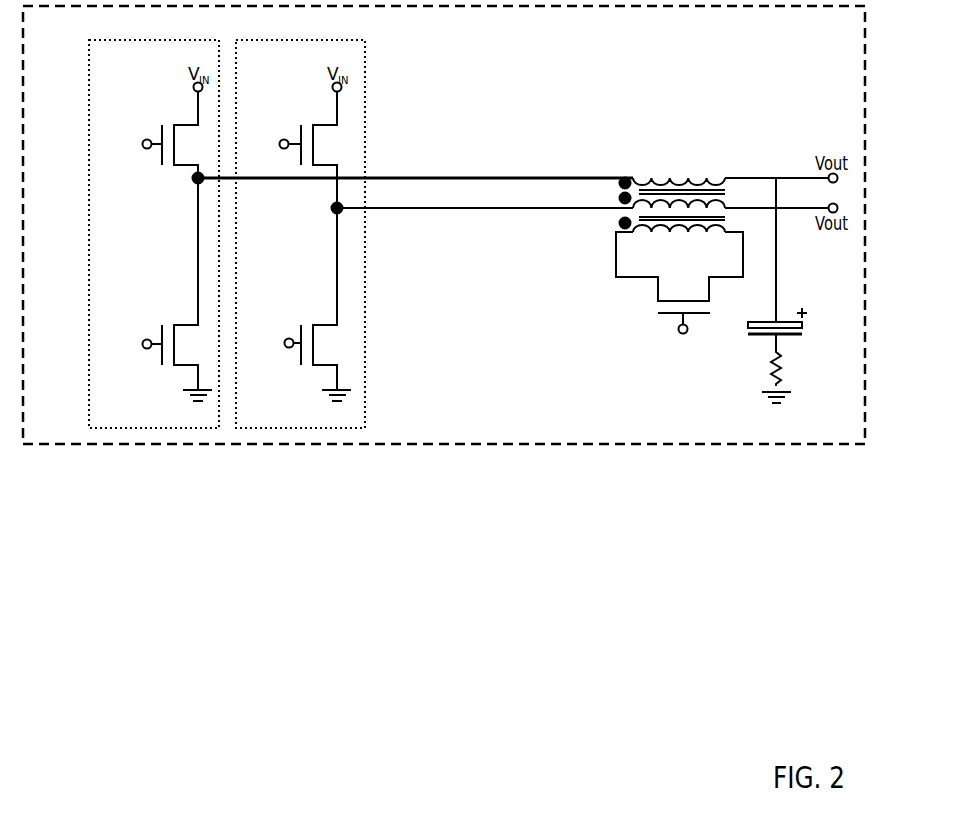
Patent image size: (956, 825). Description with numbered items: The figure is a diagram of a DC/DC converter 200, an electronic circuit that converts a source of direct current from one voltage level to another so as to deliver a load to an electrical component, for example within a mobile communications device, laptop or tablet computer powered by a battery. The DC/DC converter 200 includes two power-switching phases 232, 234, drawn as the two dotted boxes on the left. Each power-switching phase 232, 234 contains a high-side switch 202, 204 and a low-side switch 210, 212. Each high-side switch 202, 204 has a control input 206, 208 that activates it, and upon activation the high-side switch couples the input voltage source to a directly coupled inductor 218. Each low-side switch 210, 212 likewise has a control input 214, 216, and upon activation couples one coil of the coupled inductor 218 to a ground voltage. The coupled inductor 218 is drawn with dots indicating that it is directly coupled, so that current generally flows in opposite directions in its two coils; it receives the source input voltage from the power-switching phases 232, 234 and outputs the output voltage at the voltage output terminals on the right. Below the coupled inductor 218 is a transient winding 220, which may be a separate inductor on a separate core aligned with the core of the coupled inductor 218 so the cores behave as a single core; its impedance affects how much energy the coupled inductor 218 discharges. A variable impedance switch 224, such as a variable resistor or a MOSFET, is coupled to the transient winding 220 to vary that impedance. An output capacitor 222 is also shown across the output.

The DC/DC converter 200 is at (200, 33).
The high-side switch 202 is at (182, 112).
The high-side switch 204 is at (322, 112).
The control input 206 is at (134, 155).
The control input 208 is at (272, 155).
The low-side switch 210 is at (184, 315).
The low-side switch 212 is at (322, 315).
The control input 214 is at (133, 355).
The control input 216 is at (282, 355).
The coupled inductor 218 is at (682, 163).
The transient winding 220 is at (717, 268).
The output capacitor 222 is at (737, 329).
The variable impedance switch 224 is at (673, 343).
The power-switching phase 232 is at (118, 60).
The power-switching phase 234 is at (269, 60).